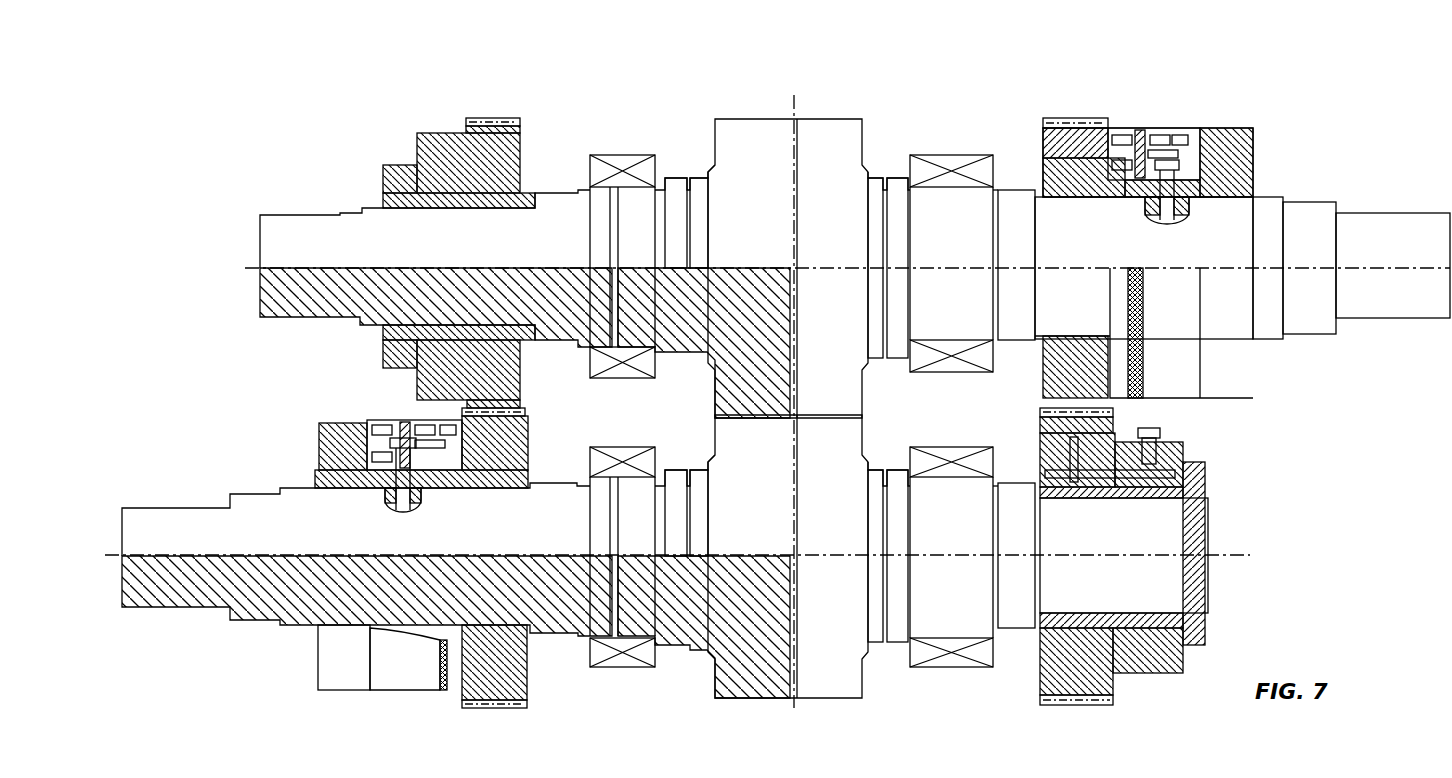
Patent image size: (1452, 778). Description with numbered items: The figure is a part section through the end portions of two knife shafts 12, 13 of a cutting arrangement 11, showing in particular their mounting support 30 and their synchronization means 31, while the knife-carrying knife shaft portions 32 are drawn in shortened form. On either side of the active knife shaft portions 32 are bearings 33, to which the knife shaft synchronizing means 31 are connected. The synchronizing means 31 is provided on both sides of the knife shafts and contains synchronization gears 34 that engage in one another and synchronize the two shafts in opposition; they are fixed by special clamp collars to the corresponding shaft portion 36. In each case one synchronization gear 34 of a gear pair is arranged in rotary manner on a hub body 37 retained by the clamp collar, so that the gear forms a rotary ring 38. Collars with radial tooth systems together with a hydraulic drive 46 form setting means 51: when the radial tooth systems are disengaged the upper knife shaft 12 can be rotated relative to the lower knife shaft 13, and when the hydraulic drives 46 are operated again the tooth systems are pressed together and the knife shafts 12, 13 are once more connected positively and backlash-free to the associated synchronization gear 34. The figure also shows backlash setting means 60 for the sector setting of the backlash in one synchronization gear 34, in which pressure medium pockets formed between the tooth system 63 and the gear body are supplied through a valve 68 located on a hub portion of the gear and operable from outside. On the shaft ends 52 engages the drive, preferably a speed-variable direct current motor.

The gear 11 is at (545, 105).
The upper knife shaft 12 is at (855, 143).
The lower knife shaft 13 is at (735, 668).
The mounting support 30 is at (934, 110).
The synchronization means 31 is at (857, 373).
The knife shaft portions 32 is at (802, 122).
The bearings 33 is at (945, 160).
The synchronization gears 34 is at (1060, 130).
The shaft portion 36 is at (1253, 210).
The hub body 37 is at (1043, 166).
The rotary ring 38 is at (1043, 139).
The hydraulic drive 46 is at (1183, 128).
The setting means 51 is at (1147, 125).
The shaft ends 52 is at (1355, 220).
The backlash setting means 60 is at (1025, 432).
The tooth system 63 is at (1047, 118).
The valve 68 is at (1162, 433).